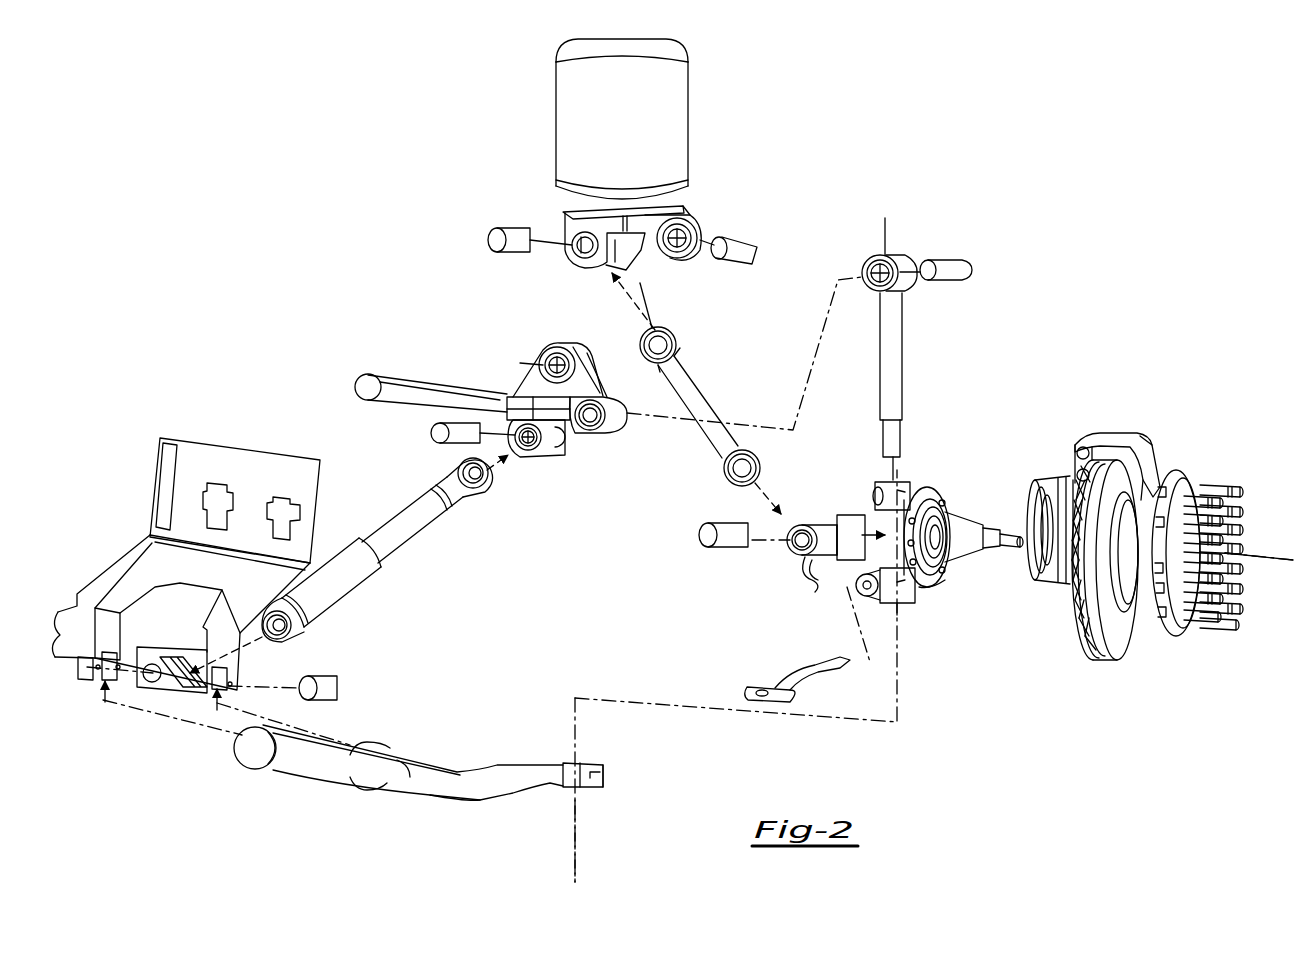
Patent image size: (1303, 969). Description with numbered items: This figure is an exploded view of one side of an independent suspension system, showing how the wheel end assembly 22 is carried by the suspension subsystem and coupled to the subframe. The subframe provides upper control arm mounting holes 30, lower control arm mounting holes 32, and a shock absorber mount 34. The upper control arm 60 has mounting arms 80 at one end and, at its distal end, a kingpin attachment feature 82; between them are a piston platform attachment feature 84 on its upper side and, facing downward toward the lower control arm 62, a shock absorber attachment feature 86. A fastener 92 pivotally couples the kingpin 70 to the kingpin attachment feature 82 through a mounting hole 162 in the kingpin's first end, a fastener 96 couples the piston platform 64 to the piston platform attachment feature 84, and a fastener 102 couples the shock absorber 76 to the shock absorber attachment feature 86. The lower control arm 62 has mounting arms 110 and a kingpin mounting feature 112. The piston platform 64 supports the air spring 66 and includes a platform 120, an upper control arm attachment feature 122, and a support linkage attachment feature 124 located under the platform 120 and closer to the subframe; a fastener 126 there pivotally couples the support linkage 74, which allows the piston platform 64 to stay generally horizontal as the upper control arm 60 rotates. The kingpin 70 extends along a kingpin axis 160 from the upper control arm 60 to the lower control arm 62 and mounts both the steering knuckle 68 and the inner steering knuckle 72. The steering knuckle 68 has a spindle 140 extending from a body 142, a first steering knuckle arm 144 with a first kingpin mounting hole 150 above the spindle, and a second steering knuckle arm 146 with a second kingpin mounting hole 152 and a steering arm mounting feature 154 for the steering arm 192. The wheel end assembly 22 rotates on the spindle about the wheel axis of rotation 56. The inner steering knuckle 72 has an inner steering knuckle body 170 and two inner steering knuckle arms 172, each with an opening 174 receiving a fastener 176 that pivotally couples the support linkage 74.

The wheel end assembly 22 is at (1155, 434).
The upper control arm mounting hole 30 is at (280, 507).
The lower control arm mounting hole 32 is at (222, 687).
The shock absorber mount 34 is at (142, 653).
The wheel axis of rotation 56 is at (1281, 562).
The upper control arm 60 is at (505, 378).
The lower control arm 62 is at (517, 793).
The piston platform 64 is at (556, 219).
The air spring 66 is at (627, 105).
The steering knuckle 68 is at (940, 480).
The kingpin 70 is at (895, 348).
The inner steering knuckle 72 is at (815, 513).
The support linkage 74 is at (693, 377).
The shock absorber 76 is at (365, 572).
The mounting arm 80 is at (407, 397).
The kingpin attachment feature 82 is at (597, 435).
The piston platform attachment feature 84 is at (545, 353).
The shock absorber attachment feature 86 is at (520, 458).
The fastener 92 is at (957, 257).
The fastener 96 is at (763, 255).
The fastener 102 is at (462, 443).
The mounting arm 110 is at (433, 770).
The kingpin mounting feature 112 is at (610, 767).
The platform 120 is at (675, 207).
The upper control arm attachment feature 122 is at (697, 223).
The support linkage attachment feature 124 is at (573, 253).
The fastener 126 is at (500, 253).
The spindle 140 is at (997, 557).
The body 142 is at (940, 573).
The first steering knuckle arm 144 is at (903, 481).
The second steering knuckle arm 146 is at (880, 590).
The first kingpin mounting hole 150 is at (877, 513).
The second kingpin mounting hole 152 is at (893, 598).
The steering arm mounting feature 154 is at (857, 577).
The kingpin axis 160 is at (580, 837).
The mounting hole 162 is at (873, 253).
The inner steering knuckle body 170 is at (863, 513).
The inner steering knuckle arm 172 is at (803, 587).
The opening 174 is at (797, 543).
The fastener 176 is at (727, 545).
The steering arm 192 is at (800, 680).